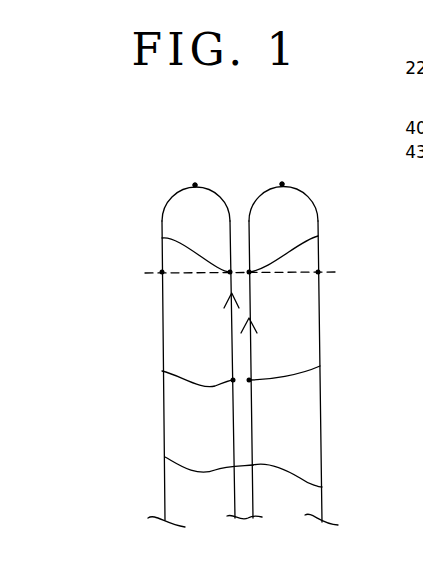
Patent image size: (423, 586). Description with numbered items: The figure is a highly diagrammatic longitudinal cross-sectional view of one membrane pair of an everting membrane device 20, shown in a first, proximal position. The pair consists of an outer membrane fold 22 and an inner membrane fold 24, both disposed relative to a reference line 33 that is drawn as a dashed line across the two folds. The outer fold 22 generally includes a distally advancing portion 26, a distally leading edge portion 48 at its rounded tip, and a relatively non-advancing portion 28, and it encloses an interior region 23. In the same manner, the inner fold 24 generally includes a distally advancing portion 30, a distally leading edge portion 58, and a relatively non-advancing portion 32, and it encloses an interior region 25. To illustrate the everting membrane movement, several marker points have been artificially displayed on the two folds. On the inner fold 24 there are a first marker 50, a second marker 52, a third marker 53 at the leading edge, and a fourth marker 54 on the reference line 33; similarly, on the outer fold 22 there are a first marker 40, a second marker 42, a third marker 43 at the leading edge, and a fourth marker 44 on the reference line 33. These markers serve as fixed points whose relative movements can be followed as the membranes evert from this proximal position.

The everting membrane device 20 is at (211, 142).
The outer membrane fold 22 is at (153, 219).
The inner membrane fold 24 is at (329, 208).
The distally leading edge portion 48 is at (195, 185).
The third marker 43 is at (195, 185).
The third marker 53 is at (282, 184).
The distally leading edge portion 58 is at (282, 184).
The second marker 42 is at (162, 238).
The fourth marker 44 is at (162, 272).
The reference line 33 is at (178, 274).
The second marker 52 is at (318, 236).
The fourth marker 54 is at (318, 272).
The first marker 40 is at (162, 371).
The first marker 50 is at (320, 366).
The relatively non-advancing portion 28 is at (165, 445).
The distally advancing portion 26 is at (165, 457).
The interior region 23 is at (200, 506).
The relatively non-advancing portion 32 is at (322, 450).
The distally advancing portion 30 is at (322, 487).
The interior region 25 is at (288, 504).